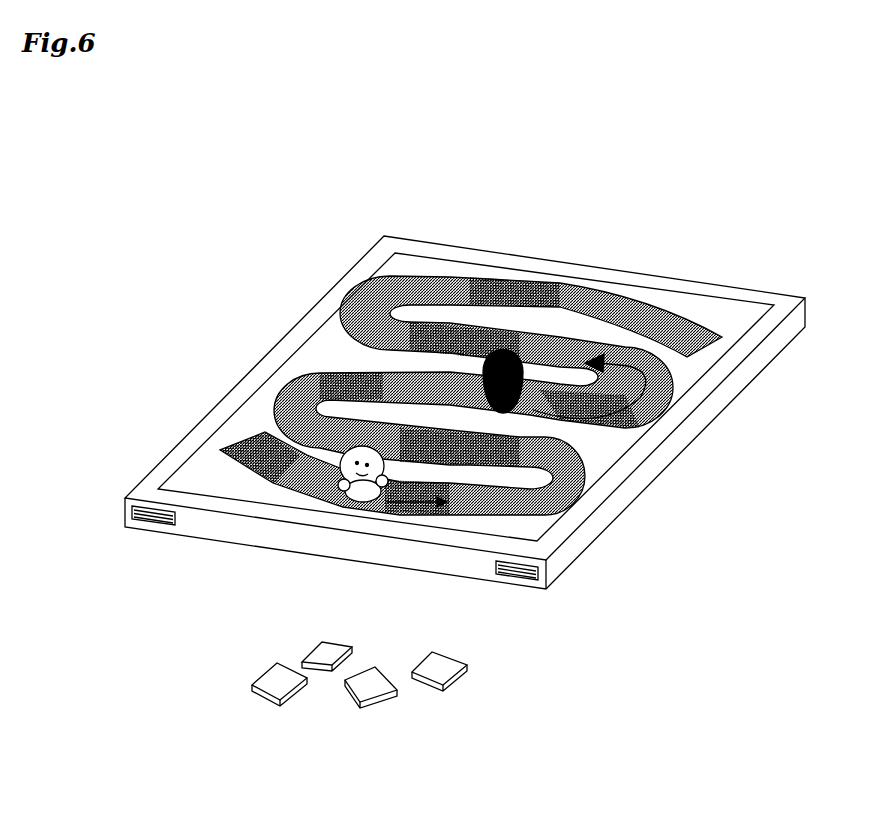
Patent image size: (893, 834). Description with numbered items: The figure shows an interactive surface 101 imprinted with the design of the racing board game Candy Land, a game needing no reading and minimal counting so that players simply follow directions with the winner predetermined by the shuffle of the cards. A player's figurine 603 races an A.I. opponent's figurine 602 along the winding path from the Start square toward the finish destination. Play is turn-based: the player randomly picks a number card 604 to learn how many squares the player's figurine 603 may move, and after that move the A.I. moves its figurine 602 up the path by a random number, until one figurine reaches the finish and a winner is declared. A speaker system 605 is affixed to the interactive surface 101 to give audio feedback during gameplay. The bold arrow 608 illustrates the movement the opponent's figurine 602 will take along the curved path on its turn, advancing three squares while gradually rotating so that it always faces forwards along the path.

The interactive surface 101 is at (729, 293).
The A.I. opponent's figurine 602 is at (540, 417).
The player's figurine 603 is at (345, 469).
The number card 604 is at (432, 683).
The speaker system 605 is at (547, 590).
The bold arrow 608 is at (589, 386).